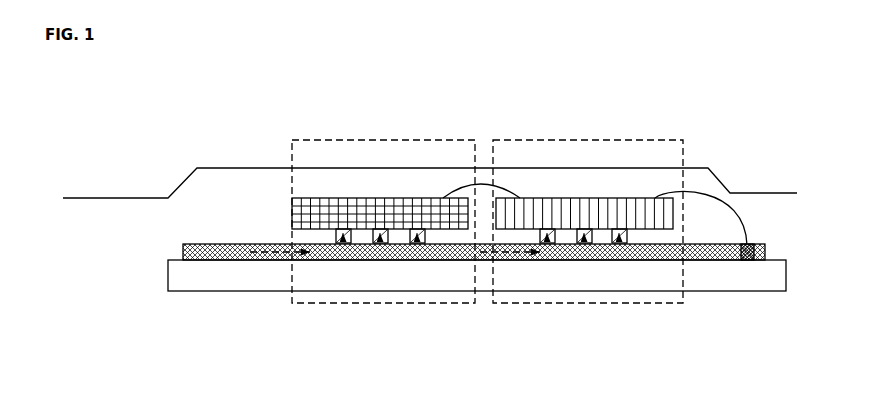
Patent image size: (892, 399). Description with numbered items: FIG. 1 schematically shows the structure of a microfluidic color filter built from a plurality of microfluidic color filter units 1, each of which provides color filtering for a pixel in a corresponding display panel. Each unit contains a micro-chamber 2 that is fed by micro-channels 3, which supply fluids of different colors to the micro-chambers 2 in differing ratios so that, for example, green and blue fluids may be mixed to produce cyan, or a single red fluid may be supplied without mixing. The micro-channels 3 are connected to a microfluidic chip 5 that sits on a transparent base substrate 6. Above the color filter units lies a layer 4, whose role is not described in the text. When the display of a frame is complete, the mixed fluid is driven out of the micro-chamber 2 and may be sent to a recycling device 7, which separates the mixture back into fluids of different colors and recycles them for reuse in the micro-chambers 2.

The microfluidic color filter unit 1 is at (537, 140).
The micro-chamber 2 is at (275, 213).
The micro-channel 3 is at (288, 235).
The cover sheet 4 is at (152, 183).
The microfluidic chip 5 is at (152, 253).
The transparent base substrate 6 is at (152, 276).
The recycling device 7 is at (747, 256).